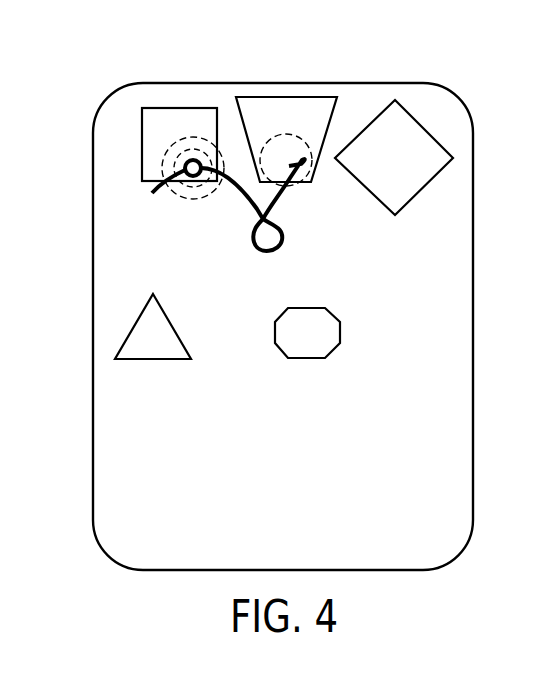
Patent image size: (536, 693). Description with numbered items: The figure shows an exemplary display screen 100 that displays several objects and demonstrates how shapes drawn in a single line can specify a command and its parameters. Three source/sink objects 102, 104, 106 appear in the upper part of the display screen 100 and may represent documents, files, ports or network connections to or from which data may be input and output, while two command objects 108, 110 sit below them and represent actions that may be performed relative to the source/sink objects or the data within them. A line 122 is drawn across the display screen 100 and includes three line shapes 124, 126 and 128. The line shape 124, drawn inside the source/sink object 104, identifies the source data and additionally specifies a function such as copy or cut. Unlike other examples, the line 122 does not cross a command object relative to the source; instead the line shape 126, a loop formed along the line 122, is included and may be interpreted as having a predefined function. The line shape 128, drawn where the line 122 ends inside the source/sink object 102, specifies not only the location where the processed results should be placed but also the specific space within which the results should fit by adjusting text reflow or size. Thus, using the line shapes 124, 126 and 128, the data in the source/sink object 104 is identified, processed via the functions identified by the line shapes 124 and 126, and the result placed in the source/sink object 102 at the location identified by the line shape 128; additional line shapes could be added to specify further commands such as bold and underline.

The display screen 100 is at (74, 75).
The source/sink object 102 is at (176, 135).
The source/sink object 104 is at (286, 128).
The source/sink object 106 is at (409, 155).
The command object 108 is at (321, 355).
The command object 110 is at (168, 352).
The line 122 is at (247, 205).
The line shape 124 is at (302, 157).
The line shape 126 is at (286, 247).
The line shape 128 is at (167, 184).